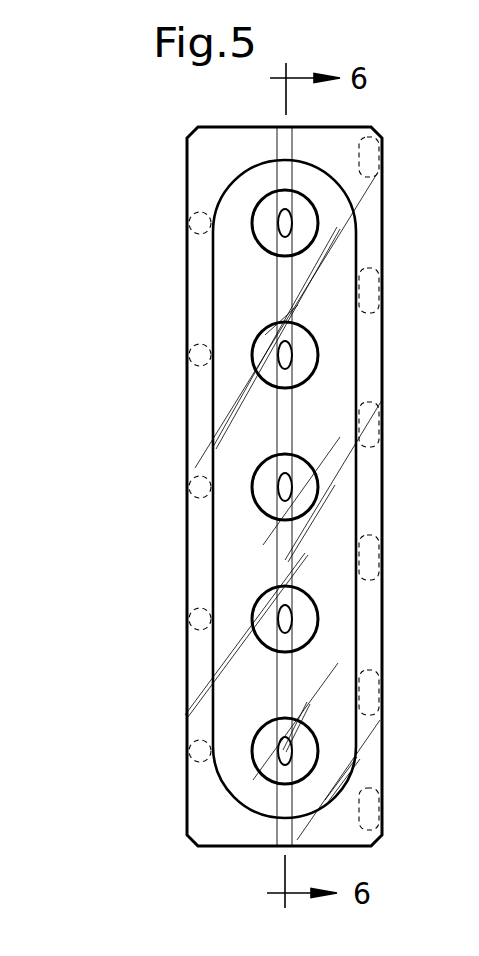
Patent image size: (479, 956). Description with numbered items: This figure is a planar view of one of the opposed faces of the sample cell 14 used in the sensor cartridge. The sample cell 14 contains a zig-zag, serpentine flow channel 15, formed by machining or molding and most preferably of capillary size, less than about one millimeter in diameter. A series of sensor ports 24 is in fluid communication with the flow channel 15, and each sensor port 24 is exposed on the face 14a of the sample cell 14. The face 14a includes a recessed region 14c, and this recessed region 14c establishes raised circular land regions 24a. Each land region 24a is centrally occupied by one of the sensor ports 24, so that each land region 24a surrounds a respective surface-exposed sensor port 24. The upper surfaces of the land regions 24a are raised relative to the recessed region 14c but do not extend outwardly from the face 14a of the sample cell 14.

The sample cell 14 is at (150, 837).
The face of the sample cell 14a is at (240, 832).
The recessed region 14c is at (256, 545).
The flow channel 15 is at (291, 788).
The sensor port 24 is at (280, 228).
The land region 24a is at (308, 225).